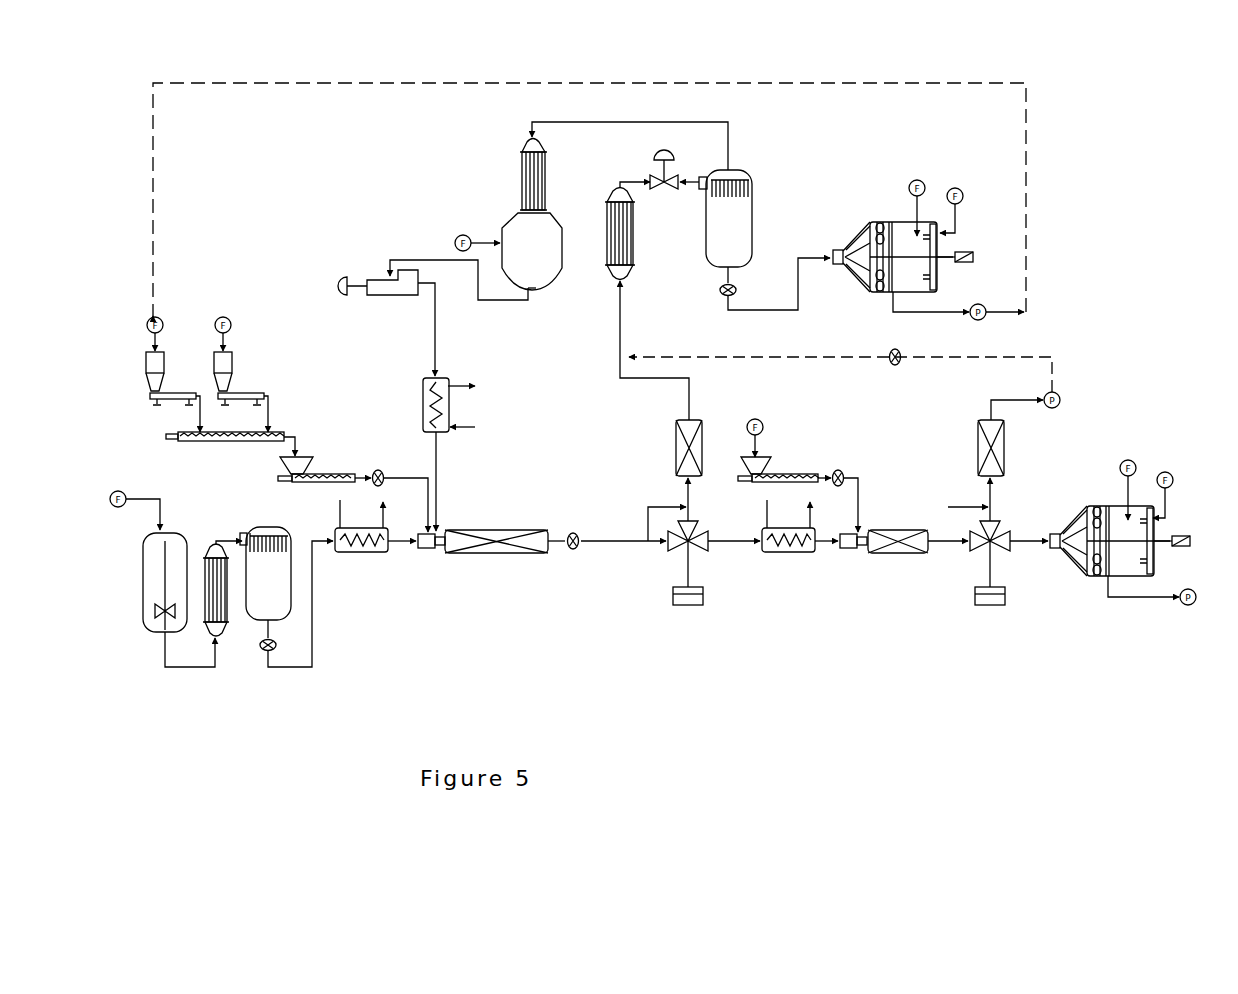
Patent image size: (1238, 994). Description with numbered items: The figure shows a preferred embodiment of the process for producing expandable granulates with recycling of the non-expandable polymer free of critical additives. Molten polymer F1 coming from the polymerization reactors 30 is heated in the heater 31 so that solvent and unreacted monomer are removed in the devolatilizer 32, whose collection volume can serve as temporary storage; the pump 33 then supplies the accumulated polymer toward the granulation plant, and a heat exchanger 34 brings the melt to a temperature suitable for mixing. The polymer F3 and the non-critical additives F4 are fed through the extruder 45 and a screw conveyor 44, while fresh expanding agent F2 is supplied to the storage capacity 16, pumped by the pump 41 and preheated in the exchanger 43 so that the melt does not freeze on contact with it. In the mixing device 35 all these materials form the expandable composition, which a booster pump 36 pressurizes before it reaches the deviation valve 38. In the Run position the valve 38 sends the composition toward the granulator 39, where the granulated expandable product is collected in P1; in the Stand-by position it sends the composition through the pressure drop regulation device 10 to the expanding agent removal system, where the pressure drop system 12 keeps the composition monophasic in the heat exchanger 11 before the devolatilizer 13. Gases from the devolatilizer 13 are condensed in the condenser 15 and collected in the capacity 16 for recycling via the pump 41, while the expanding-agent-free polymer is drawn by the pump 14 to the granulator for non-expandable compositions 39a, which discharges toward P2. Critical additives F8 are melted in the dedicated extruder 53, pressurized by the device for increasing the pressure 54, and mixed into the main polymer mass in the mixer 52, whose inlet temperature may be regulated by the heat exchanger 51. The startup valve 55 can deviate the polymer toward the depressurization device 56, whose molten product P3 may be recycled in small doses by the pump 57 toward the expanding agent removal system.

The pressure drop regulation device 10 is at (676, 441).
The heat exchanger 11 is at (613, 186).
The pressure drop system 12 is at (667, 200).
The devolatilizer 13 is at (722, 166).
The pump 14 is at (721, 299).
The condenser 15 is at (520, 132).
The storage capacity 16 is at (502, 222).
The polymerization reactors 30 is at (143, 628).
The heater 31 is at (210, 540).
The devolatilizer 32 is at (262, 522).
The pump 33 is at (265, 655).
The heat exchanger 34 is at (357, 553).
The mixing device 35 is at (490, 556).
The booster pump 36 is at (566, 557).
The deviation valve 38 is at (690, 612).
The granulator 39 is at (1074, 582).
The granulator for non-expandable compositions 39a is at (866, 300).
The pump 41 is at (396, 300).
The exchanger 43 is at (423, 402).
The screw conveyor 44 is at (276, 426).
The extruder 45 is at (327, 470).
The heat exchanger 51 is at (778, 557).
The mixer 52 is at (918, 557).
The extruder 53 is at (790, 470).
The device for increasing the pressure 54 is at (845, 468).
The startup valve 55 is at (992, 612).
The depressurization device 56 is at (978, 441).
The pump 57 is at (890, 372).
The molten polymer F1 is at (111, 506).
The fresh expanding agent F2 is at (460, 234).
The polymer F3 is at (163, 322).
The additives F4 is at (231, 322).
The critical additives F8 is at (762, 426).
The granulated expandable product P1 is at (1196, 590).
The pressure gauge P2 is at (982, 304).
The molten product P3 is at (1056, 392).